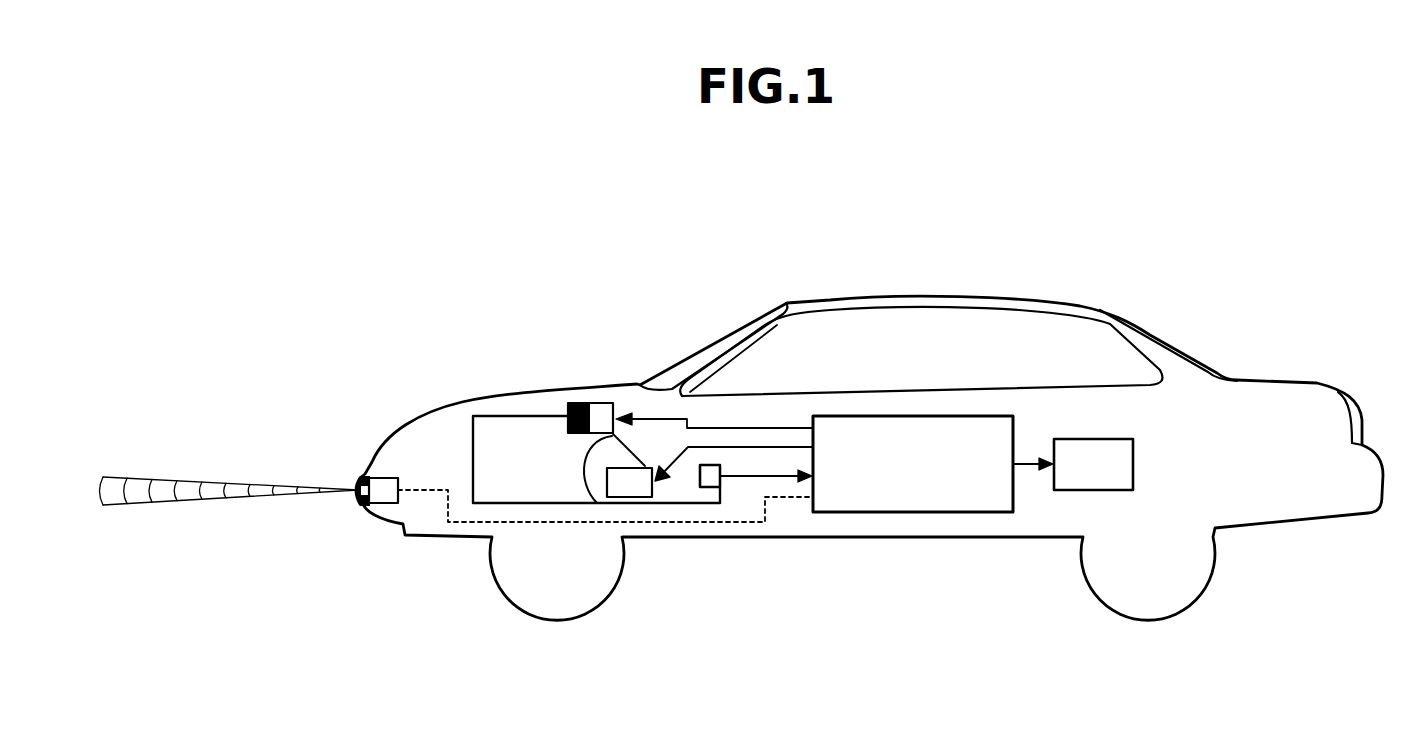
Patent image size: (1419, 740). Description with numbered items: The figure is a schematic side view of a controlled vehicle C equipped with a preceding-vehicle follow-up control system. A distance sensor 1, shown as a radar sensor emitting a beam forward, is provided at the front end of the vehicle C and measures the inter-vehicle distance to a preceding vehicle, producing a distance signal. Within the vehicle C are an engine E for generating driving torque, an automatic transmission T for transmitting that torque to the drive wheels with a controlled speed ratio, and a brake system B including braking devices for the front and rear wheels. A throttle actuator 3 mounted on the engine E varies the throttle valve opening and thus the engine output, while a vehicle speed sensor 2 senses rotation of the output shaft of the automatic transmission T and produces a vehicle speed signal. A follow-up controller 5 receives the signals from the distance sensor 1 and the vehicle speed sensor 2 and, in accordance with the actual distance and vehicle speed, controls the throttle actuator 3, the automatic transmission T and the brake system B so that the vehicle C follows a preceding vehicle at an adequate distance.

The distance sensor 1 is at (383, 492).
The vehicle speed sensor 2 is at (730, 488).
The throttle actuator 3 is at (603, 410).
The follow-up controller 5 is at (937, 513).
The brake system B is at (1070, 491).
The vehicle C is at (1012, 276).
The engine E is at (512, 425).
The automatic transmission T is at (643, 500).